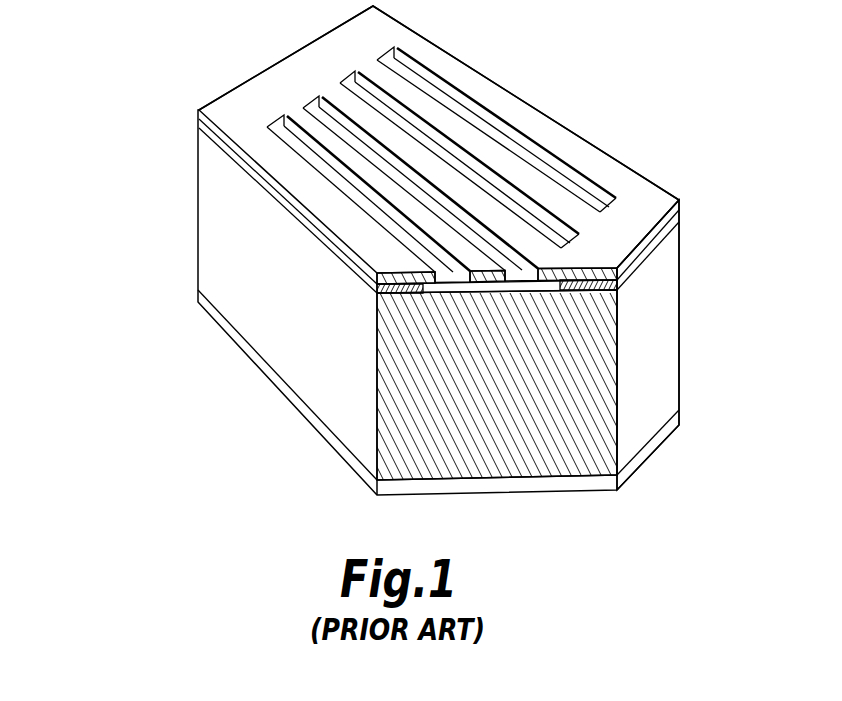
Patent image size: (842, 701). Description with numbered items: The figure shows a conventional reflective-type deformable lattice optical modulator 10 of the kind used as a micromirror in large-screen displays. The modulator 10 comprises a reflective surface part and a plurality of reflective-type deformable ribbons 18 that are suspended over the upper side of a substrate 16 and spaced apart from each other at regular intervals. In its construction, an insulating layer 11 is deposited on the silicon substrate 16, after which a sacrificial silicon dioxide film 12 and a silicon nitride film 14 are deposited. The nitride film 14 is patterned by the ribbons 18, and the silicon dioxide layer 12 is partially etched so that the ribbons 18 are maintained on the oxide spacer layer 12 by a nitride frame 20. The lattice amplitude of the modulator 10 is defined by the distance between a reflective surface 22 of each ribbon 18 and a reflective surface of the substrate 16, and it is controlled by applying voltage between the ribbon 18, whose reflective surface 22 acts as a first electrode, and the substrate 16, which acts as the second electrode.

The reflective-type deformable lattice optical modulator 10 is at (142, 137).
The insulating layer 11 is at (679, 226).
The sacrificial silicon dioxide film 12 is at (679, 200).
The silicon nitride film 14 is at (345, 256).
The substrate 16 is at (660, 372).
The reflective-type deformable ribbons 18 is at (303, 115).
The nitride frame 20 is at (523, 124).
The reflective surface 22 is at (293, 199).